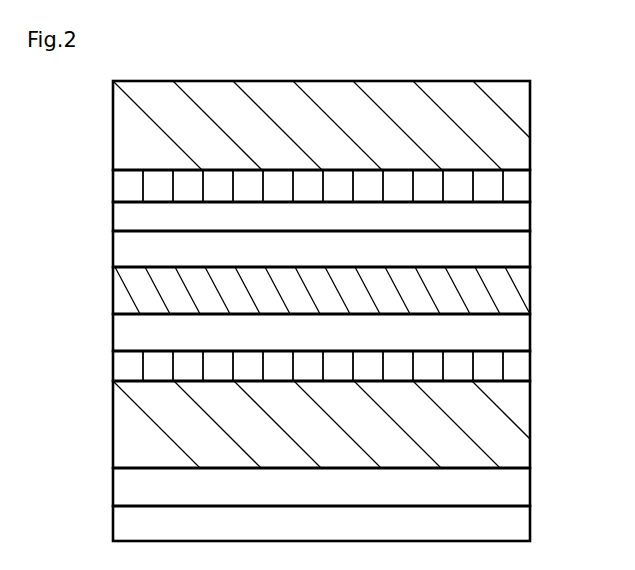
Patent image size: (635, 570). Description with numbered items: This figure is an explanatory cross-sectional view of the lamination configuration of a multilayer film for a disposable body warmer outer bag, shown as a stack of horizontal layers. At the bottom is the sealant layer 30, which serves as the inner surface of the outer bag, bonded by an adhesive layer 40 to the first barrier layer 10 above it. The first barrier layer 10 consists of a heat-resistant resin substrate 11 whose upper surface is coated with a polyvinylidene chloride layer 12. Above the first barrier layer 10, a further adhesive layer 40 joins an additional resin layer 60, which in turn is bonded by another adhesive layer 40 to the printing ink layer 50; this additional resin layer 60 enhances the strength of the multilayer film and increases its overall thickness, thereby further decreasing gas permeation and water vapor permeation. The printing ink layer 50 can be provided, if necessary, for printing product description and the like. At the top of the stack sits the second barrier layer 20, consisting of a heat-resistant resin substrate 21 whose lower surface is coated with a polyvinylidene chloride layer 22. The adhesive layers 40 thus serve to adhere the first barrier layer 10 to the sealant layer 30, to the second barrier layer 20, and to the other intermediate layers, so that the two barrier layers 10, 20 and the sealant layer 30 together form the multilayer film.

The first barrier layer 10 is at (329, 408).
The heat-resistant resin substrate 11 is at (133, 440).
The polyvinylidene chloride layer 12 is at (132, 368).
The second barrier layer 20 is at (327, 141).
The heat-resistant resin substrate 21 is at (132, 142).
The polyvinylidene chloride layer 22 is at (130, 187).
The sealant layer 30 is at (507, 523).
The adhesive layer 40 is at (507, 250).
The printing ink layer 50 is at (507, 219).
The additional resin layer 60 is at (507, 292).